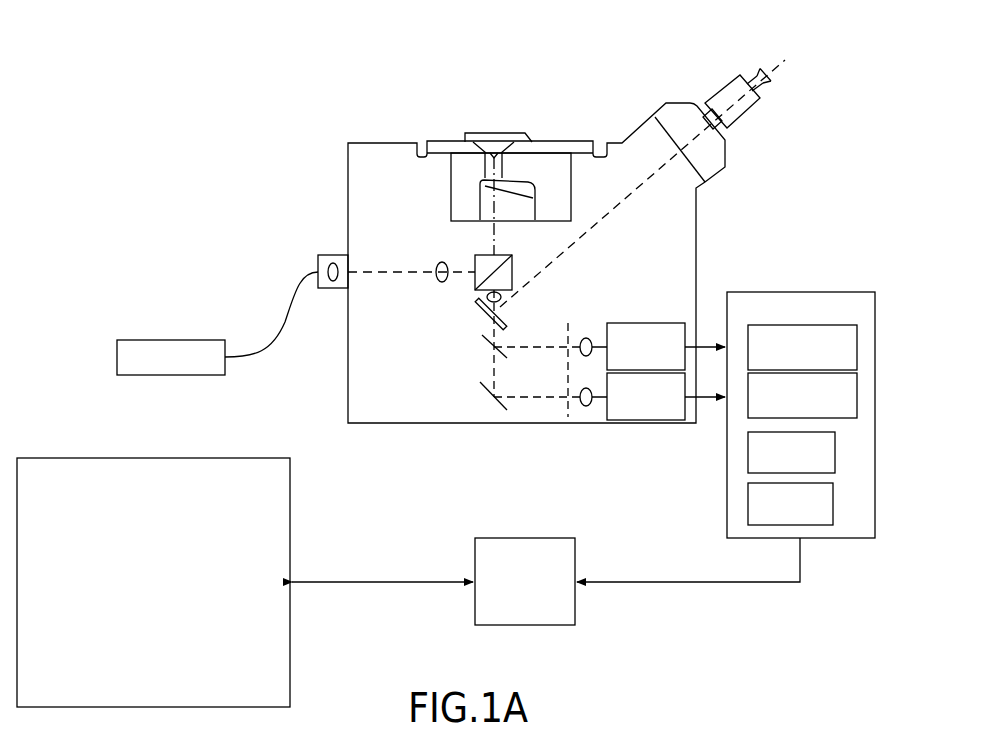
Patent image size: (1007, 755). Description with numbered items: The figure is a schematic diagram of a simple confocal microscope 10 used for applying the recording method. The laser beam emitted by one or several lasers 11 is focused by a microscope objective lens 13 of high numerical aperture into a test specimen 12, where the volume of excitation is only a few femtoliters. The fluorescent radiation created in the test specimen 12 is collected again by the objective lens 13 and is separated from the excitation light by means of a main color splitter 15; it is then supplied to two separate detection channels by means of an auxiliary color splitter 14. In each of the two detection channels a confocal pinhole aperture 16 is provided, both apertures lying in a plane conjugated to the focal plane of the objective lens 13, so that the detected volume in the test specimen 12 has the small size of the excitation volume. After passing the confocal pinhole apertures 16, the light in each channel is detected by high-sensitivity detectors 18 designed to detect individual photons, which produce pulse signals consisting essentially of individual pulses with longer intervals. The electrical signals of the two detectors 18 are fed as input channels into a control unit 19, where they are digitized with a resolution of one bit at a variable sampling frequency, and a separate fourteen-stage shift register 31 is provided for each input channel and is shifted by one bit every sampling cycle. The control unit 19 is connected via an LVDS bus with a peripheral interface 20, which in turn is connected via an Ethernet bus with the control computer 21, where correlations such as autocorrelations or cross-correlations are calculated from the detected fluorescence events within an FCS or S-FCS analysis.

The confocal microscope 10 is at (222, 110).
The laser 11 is at (155, 340).
The test specimen 12 is at (512, 133).
The microscope objective lens 13 is at (503, 172).
The auxiliary color splitter 14 is at (481, 338).
The main color splitter 15 is at (508, 267).
The confocal pinhole aperture 16 is at (568, 333).
The detector 18 is at (637, 323).
The control unit 19 is at (808, 291).
The peripheral interface 20 is at (575, 548).
The control computer 21 is at (290, 533).
The shift register 31 is at (797, 325).